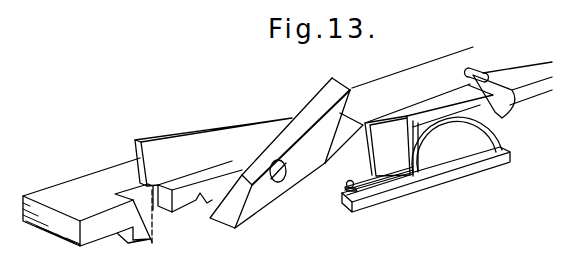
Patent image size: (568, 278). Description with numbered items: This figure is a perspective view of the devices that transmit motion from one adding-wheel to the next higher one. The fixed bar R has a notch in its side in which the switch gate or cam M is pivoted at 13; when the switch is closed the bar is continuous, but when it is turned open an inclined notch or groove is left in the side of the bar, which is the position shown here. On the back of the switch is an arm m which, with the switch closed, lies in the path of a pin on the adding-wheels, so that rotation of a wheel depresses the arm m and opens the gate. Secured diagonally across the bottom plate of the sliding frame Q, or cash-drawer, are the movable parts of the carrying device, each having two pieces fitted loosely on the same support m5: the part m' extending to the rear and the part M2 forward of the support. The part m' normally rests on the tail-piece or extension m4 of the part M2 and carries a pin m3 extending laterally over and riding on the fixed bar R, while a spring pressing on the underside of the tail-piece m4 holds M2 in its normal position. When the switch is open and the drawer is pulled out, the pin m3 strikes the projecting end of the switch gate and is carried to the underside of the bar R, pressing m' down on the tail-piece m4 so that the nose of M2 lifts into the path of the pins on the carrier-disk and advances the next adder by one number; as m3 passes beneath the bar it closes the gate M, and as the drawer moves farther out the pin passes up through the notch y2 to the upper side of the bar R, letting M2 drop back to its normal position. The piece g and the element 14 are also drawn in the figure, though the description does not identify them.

The fixed bar R is at (248, 146).
The arm m is at (213, 152).
The guide strip g is at (200, 191).
The notch y2 is at (157, 227).
The switch gate or cam M is at (286, 153).
The pivot 13 is at (278, 182).
The screw 14 is at (338, 143).
The lever M2 is at (426, 164).
The support m5 is at (457, 146).
The sliding frame Q is at (461, 141).
The tail-piece m4 is at (480, 112).
The pin m3 is at (484, 70).
The tail-piece m' is at (517, 83).